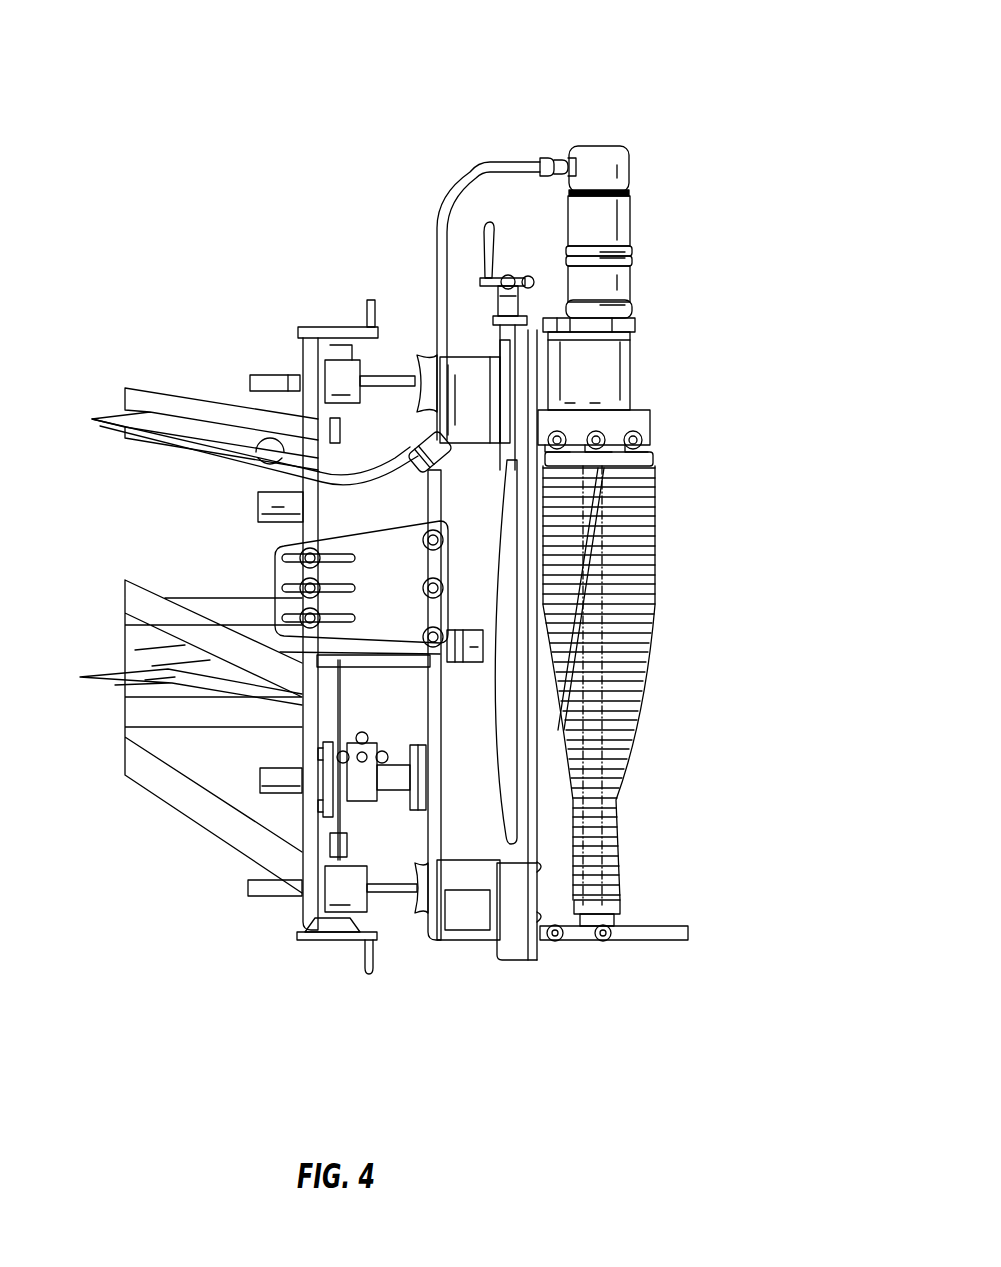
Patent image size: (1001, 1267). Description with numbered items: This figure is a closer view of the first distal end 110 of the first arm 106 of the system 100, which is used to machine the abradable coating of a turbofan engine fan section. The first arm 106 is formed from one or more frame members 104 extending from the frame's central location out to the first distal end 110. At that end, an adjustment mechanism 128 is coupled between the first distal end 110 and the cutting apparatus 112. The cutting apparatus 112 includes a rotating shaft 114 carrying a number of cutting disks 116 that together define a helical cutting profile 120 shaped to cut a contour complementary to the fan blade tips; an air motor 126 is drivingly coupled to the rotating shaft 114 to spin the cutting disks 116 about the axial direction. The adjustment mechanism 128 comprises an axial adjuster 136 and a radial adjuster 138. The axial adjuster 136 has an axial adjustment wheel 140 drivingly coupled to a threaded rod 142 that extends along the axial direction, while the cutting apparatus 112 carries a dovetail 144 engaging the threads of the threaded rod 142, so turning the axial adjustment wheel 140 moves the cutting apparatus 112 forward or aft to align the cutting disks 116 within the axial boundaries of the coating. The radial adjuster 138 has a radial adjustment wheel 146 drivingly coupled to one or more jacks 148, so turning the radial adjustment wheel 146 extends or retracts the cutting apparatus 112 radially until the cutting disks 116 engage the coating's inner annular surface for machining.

The system 100 is at (97, 98).
The frame members 104 is at (180, 795).
The first arm 106 is at (140, 352).
The first distal end 110 is at (338, 132).
The cutting apparatus 112 is at (737, 374).
The rotating shaft 114 is at (612, 878).
The cutting disks 116 is at (656, 500).
The helical cutting profile 120 is at (728, 612).
The air motor 126 is at (633, 206).
The adjustment mechanism 128 is at (360, 1030).
The axial adjuster 136 is at (500, 198).
The radial adjuster 138 is at (326, 288).
The axial adjustment wheel 140 is at (495, 262).
The threaded rod 142 is at (482, 350).
The dovetail 144 is at (535, 358).
The radial adjustment wheel 146 is at (318, 325).
The jacks 148 is at (365, 362).